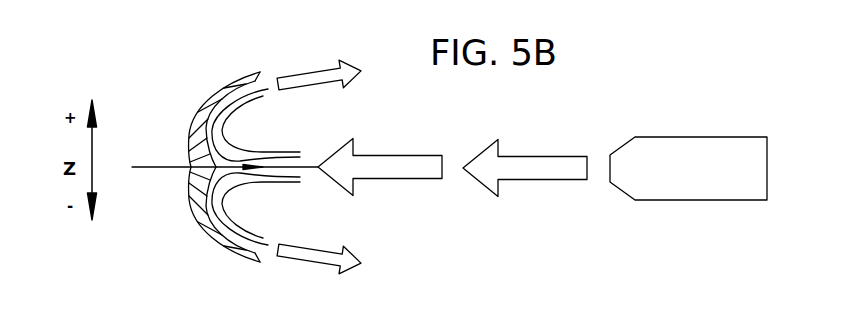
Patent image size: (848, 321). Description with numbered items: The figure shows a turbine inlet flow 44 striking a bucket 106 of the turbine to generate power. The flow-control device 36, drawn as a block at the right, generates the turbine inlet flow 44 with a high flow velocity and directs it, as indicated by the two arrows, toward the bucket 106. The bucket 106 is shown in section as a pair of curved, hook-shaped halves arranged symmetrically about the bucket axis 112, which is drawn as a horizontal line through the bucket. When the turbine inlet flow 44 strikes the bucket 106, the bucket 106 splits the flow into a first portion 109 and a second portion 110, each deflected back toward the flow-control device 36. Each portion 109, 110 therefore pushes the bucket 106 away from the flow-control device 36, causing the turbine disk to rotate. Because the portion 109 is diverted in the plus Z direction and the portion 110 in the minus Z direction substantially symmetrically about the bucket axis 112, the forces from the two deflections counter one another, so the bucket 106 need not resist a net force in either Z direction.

The bucket 106 is at (197, 102).
The bucket axis 112 is at (163, 165).
The portion 109 is at (308, 76).
The portion 110 is at (318, 243).
The turbine inlet flow 44 is at (397, 155).
The flow-control device 36 is at (658, 137).